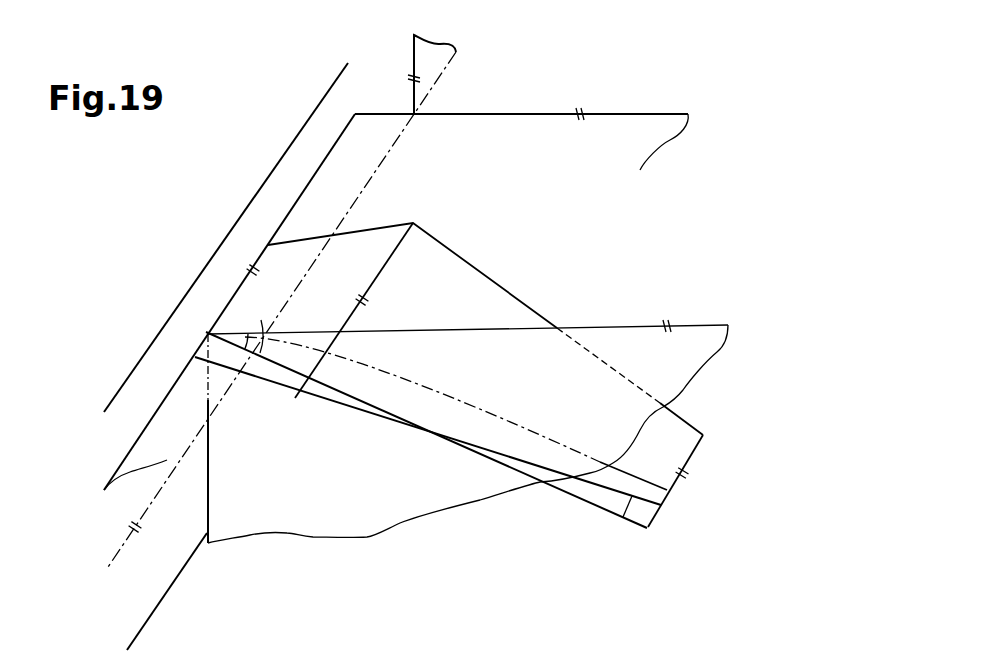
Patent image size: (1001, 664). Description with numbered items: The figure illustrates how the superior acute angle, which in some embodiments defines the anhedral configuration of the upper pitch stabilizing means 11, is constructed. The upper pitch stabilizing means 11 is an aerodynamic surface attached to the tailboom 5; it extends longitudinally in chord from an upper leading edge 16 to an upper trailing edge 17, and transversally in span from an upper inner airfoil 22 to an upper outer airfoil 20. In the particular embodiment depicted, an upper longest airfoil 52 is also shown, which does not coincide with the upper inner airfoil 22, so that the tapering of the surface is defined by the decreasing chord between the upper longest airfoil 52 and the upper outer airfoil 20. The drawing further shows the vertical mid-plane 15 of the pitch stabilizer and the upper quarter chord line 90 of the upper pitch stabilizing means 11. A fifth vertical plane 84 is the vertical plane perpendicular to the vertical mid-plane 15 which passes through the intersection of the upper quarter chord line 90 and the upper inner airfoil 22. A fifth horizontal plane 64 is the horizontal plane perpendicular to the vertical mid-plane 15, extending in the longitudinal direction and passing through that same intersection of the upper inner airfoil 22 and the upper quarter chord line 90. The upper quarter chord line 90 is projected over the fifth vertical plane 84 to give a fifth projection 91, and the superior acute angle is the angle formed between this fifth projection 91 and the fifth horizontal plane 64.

The tailboom 5 is at (338, 108).
The upper pitch stabilizing means 11 is at (513, 265).
The vertical mid-plane 15 is at (430, 57).
The upper leading edge 16 is at (258, 385).
The upper trailing edge 17 is at (477, 268).
The upper outer airfoil 20 is at (693, 453).
The upper inner airfoil 22 is at (240, 290).
The upper longest airfoil 52 is at (385, 263).
The fifth horizontal plane 64 is at (648, 128).
The fifth vertical plane 84 is at (238, 515).
The upper quarter chord line 90 is at (428, 384).
The fifth projection 91 is at (377, 402).